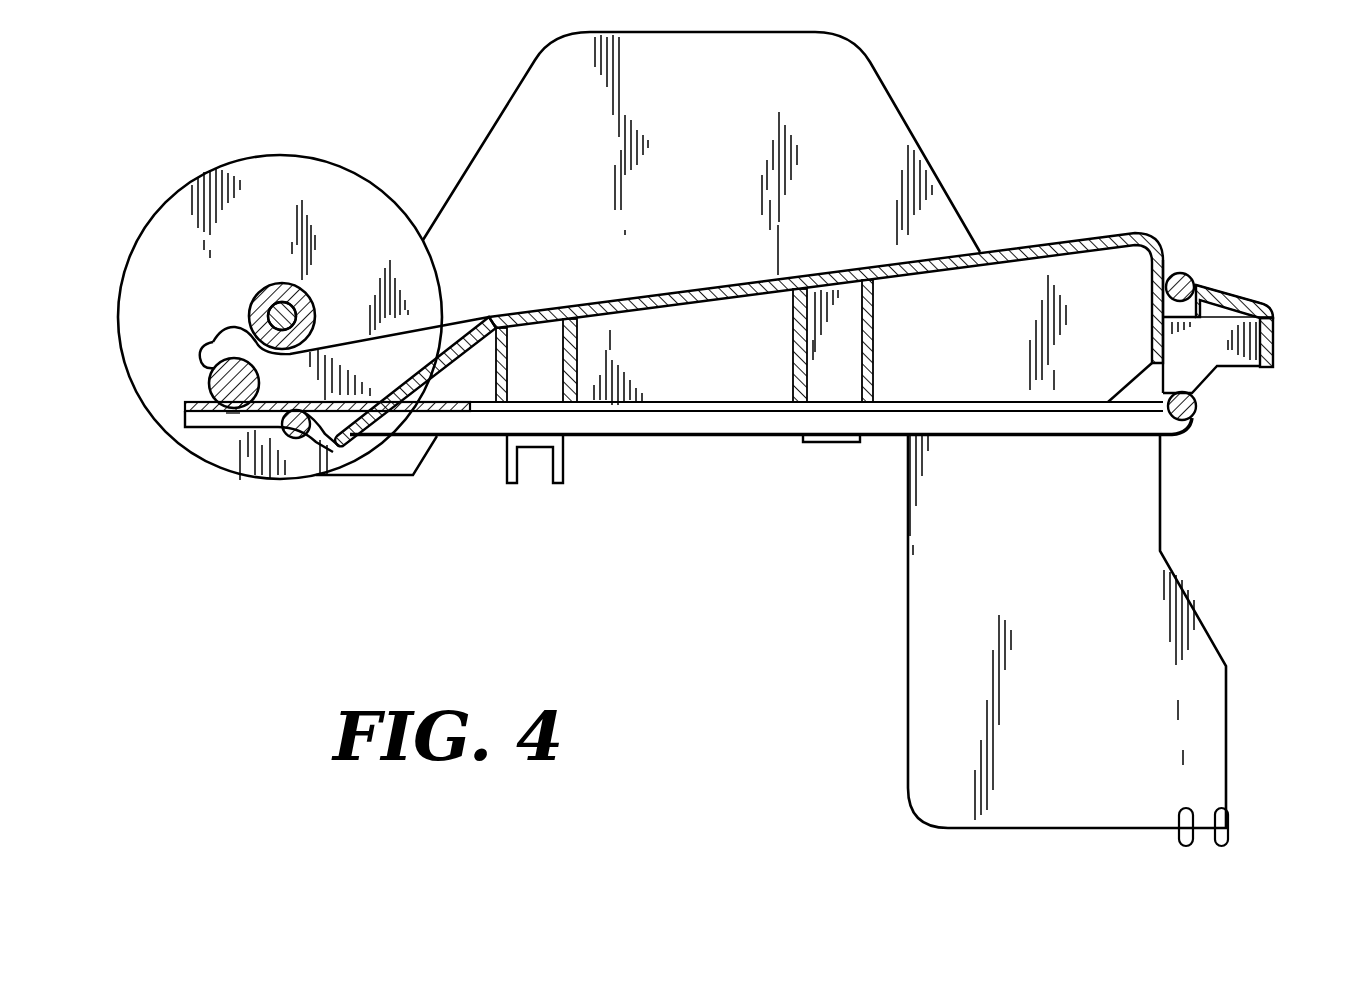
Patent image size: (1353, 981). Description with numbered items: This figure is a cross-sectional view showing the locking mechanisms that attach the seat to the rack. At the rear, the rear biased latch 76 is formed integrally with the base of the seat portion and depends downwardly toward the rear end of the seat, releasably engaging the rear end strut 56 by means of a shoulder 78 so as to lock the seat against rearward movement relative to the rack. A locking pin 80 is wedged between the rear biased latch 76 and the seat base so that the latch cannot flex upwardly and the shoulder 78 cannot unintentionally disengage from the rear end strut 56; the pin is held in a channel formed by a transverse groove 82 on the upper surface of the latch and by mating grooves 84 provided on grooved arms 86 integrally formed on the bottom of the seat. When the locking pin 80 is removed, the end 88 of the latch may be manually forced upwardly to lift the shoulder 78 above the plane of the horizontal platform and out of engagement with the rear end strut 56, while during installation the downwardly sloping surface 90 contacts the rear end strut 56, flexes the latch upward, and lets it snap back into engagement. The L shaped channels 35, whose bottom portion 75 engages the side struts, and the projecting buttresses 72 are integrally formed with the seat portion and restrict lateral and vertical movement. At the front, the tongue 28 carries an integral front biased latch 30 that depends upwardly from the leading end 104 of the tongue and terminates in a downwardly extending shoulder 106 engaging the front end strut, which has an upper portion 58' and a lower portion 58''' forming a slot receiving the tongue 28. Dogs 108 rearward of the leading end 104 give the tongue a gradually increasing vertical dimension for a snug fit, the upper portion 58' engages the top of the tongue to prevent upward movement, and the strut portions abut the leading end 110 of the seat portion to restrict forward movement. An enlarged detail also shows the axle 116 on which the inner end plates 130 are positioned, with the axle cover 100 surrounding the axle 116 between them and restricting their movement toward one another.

The tongue 28 is at (1297, 303).
The front biased latch 30 is at (1248, 301).
The L shaped channels 35 is at (580, 477).
The rear end strut 56 is at (296, 440).
The upper portion of front end strut 58' is at (1203, 257).
The lower portion of front end strut 58''' is at (1222, 419).
The projecting buttresses 72 is at (836, 444).
The bottom portion of L shaped channels 75 is at (538, 447).
The rear biased latch 76 is at (400, 440).
The shoulder 78 is at (330, 458).
The locking pin 80 is at (209, 383).
The transverse groove 82 is at (232, 416).
The mating grooves 84 is at (200, 357).
The grooved arms 86 is at (218, 338).
The end of rear biased latch 88 is at (185, 408).
The downwardly sloping surface 90 is at (458, 380).
The axle cover 100 is at (255, 302).
The leading end of tongue 104 is at (1273, 340).
The shoulder 106 is at (1215, 289).
The dogs 108 is at (1205, 370).
The leading end of seat portion 110 is at (1166, 266).
The axle 116 is at (308, 304).
The inner end plates 130 is at (185, 212).